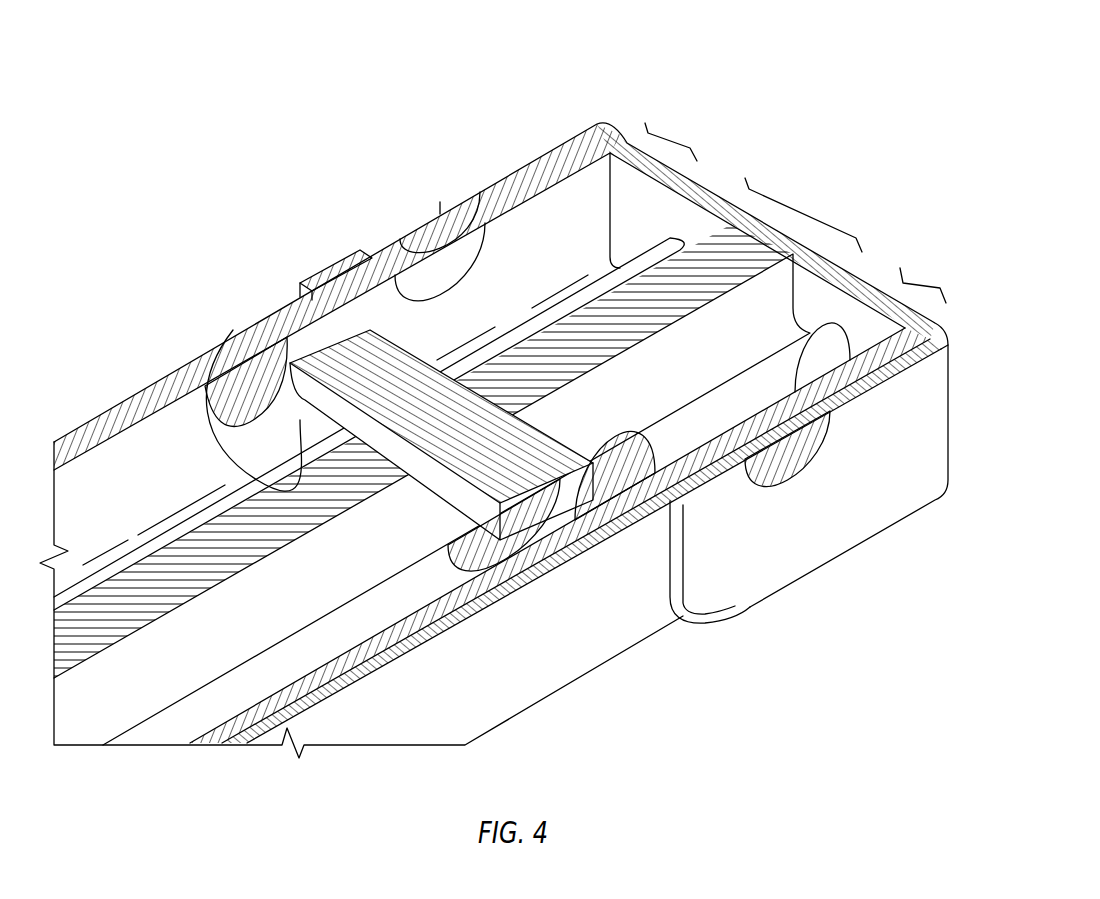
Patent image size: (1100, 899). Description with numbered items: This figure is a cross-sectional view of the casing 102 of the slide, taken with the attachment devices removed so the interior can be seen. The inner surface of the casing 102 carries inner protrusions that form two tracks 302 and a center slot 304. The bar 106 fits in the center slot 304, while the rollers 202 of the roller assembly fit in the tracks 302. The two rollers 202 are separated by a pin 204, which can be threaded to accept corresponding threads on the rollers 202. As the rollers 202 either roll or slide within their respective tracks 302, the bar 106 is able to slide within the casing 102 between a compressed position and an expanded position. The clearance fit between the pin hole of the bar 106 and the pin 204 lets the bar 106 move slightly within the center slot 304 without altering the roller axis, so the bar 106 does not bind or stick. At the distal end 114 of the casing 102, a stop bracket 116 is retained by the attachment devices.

The casing 102 is at (165, 392).
The bar 106 is at (160, 588).
The distal end 114 is at (616, 197).
The stop bracket 116 is at (870, 490).
The rollers 202 is at (232, 455).
The pin 204 is at (385, 385).
The tracks 302 is at (675, 140).
The center slot 304 is at (805, 185).